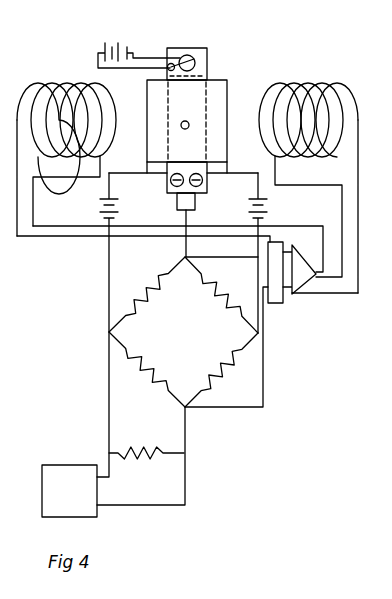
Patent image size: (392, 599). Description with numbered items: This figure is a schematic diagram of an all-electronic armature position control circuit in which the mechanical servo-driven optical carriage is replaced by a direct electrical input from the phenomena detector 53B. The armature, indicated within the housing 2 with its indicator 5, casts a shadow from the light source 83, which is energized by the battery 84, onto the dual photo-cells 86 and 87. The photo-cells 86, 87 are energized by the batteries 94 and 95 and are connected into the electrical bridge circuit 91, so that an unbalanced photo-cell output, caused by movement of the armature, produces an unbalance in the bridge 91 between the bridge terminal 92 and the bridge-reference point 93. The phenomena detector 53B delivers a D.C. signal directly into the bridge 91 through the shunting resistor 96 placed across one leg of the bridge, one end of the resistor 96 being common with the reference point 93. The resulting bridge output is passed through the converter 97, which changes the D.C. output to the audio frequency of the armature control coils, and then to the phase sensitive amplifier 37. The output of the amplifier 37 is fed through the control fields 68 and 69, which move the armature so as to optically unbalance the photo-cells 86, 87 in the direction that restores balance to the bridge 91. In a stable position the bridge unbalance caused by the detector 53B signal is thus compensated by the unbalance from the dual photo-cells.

The housing 2 is at (197, 126).
The indicator 5 is at (186, 135).
The phase sensitive amplifier 37 is at (307, 277).
The phenomena detector 53B is at (69, 481).
The control field 68 is at (66, 149).
The control field 69 is at (321, 180).
The light source 83 is at (201, 55).
The battery 84 is at (139, 43).
The photo-cell 86 is at (146, 167).
The photo-cell 87 is at (225, 167).
The bridge circuit 91 is at (183, 332).
The bridge terminal 92 is at (148, 294).
The bridge-reference point 93 is at (151, 369).
The battery 94 is at (95, 325).
The battery 95 is at (277, 253).
The shunting resistor 96 is at (146, 464).
The converter 97 is at (325, 327).